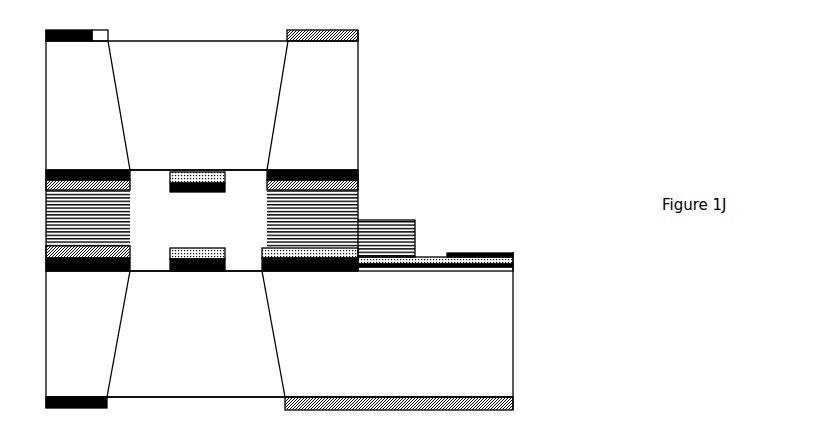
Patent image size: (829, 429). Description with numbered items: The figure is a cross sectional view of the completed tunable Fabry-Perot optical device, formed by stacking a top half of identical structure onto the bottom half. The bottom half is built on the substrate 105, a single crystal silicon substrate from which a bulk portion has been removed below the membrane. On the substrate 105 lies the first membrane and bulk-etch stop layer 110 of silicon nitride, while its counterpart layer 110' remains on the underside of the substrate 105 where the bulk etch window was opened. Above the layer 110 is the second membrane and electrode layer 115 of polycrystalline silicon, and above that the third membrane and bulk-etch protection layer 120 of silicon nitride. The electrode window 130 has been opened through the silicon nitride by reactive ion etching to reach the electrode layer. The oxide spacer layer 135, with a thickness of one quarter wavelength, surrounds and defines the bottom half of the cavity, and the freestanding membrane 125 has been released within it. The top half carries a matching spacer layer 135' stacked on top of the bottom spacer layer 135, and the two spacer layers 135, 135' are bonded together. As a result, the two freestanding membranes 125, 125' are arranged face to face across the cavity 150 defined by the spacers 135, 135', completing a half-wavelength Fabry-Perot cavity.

The substrate 105 is at (490, 345).
The first membrane and bulk-etch stop layer 110 is at (311, 270).
The first membrane and bulk-etch stop layer (bottom) 110' is at (311, 407).
The second membrane and electrode layer 115 is at (513, 260).
The third membrane and bulk-etch protection layer 120 is at (513, 252).
The membrane 125 is at (197, 281).
The membrane 125' is at (197, 167).
The electrode window 130 is at (430, 252).
The spacer layer 135 is at (399, 228).
The spacer layer 135' is at (340, 215).
The cavity 150 is at (185, 232).